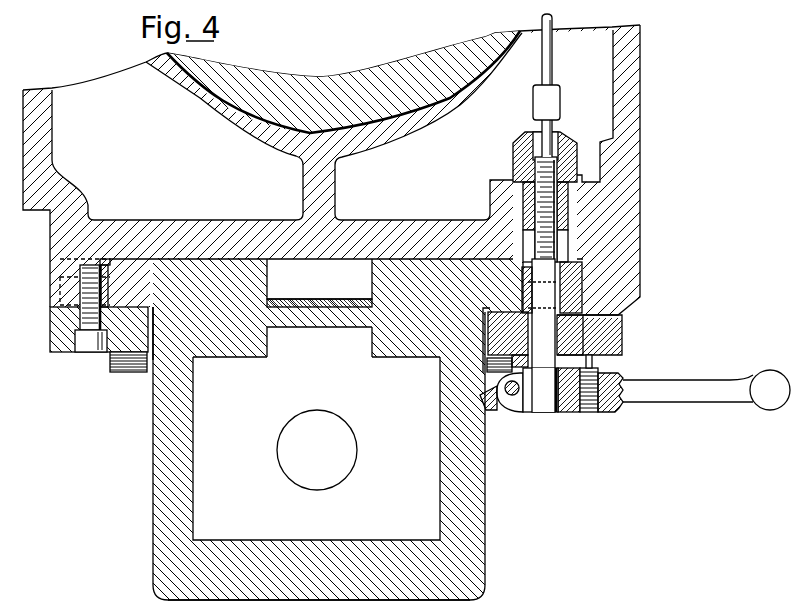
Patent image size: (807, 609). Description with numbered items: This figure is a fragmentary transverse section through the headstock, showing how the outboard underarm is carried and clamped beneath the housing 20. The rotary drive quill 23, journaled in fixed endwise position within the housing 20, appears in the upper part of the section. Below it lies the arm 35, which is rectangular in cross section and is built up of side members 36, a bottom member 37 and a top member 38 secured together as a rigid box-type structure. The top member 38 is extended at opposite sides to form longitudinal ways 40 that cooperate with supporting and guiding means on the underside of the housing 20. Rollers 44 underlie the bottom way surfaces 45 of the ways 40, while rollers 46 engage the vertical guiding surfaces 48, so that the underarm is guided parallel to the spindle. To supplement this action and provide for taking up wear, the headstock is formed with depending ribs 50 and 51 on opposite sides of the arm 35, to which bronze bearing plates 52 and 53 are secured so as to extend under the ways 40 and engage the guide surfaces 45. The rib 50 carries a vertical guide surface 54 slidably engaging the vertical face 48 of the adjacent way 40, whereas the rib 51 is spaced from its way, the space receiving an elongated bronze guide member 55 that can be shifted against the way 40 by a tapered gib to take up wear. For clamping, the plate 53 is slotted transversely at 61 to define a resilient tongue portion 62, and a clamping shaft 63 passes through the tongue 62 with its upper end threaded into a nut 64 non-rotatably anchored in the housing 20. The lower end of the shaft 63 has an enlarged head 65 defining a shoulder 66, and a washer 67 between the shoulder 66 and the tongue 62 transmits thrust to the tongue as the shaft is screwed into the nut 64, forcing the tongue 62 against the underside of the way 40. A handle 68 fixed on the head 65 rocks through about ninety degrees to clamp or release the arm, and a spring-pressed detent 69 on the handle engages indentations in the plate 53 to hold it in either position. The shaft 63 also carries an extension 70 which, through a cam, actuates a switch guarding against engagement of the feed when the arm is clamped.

The housing 20 is at (634, 60).
The rotary drive quill 23 is at (385, 115).
The arm 35 is at (157, 478).
The side members 36 is at (157, 508).
The bottom member 37 is at (220, 595).
The top member 38 is at (217, 264).
The longitudinal ways 40 is at (132, 258).
The rollers 44 is at (128, 368).
The bottom way surfaces 45 is at (153, 319).
The rollers 46 is at (60, 287).
The vertical guiding surfaces 48 is at (109, 271).
The depending rib 50 is at (60, 253).
The depending rib 51 is at (638, 270).
The bearing plate 52 is at (63, 350).
The bearing plate 53 is at (622, 332).
The vertical guide surface 54 is at (109, 265).
The guide member 55 is at (573, 268).
The slot 61 is at (602, 336).
The tongue portion 62 is at (486, 330).
The clamping shaft 63 is at (540, 295).
The nut 64 is at (520, 157).
The enlarged head 65 is at (576, 412).
The shoulder 66 is at (542, 367).
The washer 67 is at (522, 355).
The handle 68 is at (712, 403).
The spring-pressed detent 69 is at (597, 365).
The extension 70 is at (552, 58).